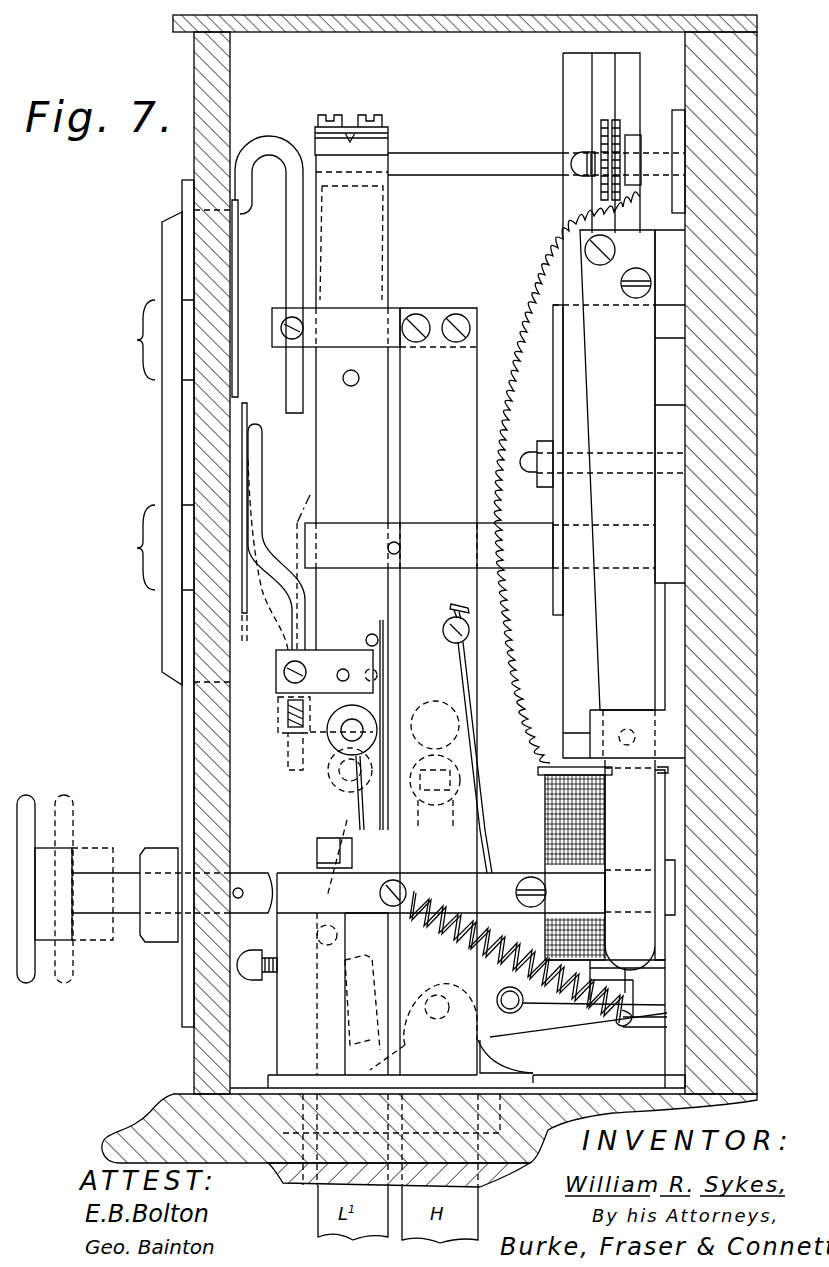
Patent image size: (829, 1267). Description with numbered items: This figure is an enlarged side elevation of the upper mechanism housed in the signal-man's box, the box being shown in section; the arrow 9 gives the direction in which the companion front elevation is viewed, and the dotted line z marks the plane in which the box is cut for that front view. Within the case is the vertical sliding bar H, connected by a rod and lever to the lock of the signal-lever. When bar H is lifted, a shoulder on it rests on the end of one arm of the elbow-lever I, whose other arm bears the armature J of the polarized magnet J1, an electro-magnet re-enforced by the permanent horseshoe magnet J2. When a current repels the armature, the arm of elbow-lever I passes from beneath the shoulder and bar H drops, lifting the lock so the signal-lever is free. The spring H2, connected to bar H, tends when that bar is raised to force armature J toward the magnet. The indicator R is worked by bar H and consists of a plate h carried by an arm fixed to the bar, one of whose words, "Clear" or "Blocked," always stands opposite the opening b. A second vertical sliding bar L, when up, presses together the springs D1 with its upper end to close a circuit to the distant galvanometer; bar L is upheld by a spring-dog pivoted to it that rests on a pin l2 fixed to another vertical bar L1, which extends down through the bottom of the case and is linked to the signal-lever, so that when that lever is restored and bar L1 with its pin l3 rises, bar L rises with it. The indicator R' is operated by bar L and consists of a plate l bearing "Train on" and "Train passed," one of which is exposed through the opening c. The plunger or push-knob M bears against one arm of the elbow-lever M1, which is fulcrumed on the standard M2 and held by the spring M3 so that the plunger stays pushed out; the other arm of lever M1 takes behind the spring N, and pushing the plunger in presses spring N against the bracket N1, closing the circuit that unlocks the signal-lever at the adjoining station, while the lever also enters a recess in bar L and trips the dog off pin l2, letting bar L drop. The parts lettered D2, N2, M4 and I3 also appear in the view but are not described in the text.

The indicator R is at (155, 448).
The indicator R' is at (151, 535).
The opening b is at (137, 340).
The opening c is at (137, 547).
The plate h is at (267, 274).
The plate l is at (248, 524).
The springs D1 is at (365, 135).
The shaft D2 is at (475, 165).
The permanent or horseshoe magnet J2 is at (601, 143).
The adjusting screws N2 is at (618, 266).
The spring N is at (617, 470).
The bracket N1 is at (628, 733).
The vertical sliding bar L is at (342, 492).
The sliding bar H is at (410, 691).
The pin l3 is at (384, 682).
The pin l2 is at (388, 823).
The polarized magnet J1 is at (567, 576).
The elbow-lever M1 is at (441, 893).
The standard M2 is at (287, 974).
The stop M4 is at (317, 856).
The plunger or push-knob M is at (105, 889).
The vertical bar L1 is at (366, 994).
The spring H2 is at (423, 1023).
The elbow-lever I is at (578, 1012).
The armature J is at (639, 998).
The spring M3 is at (568, 1005).
The latch bracket I3 is at (506, 1056).
The section line z is at (255, 1192).
The arrow 9 is at (75, 738).